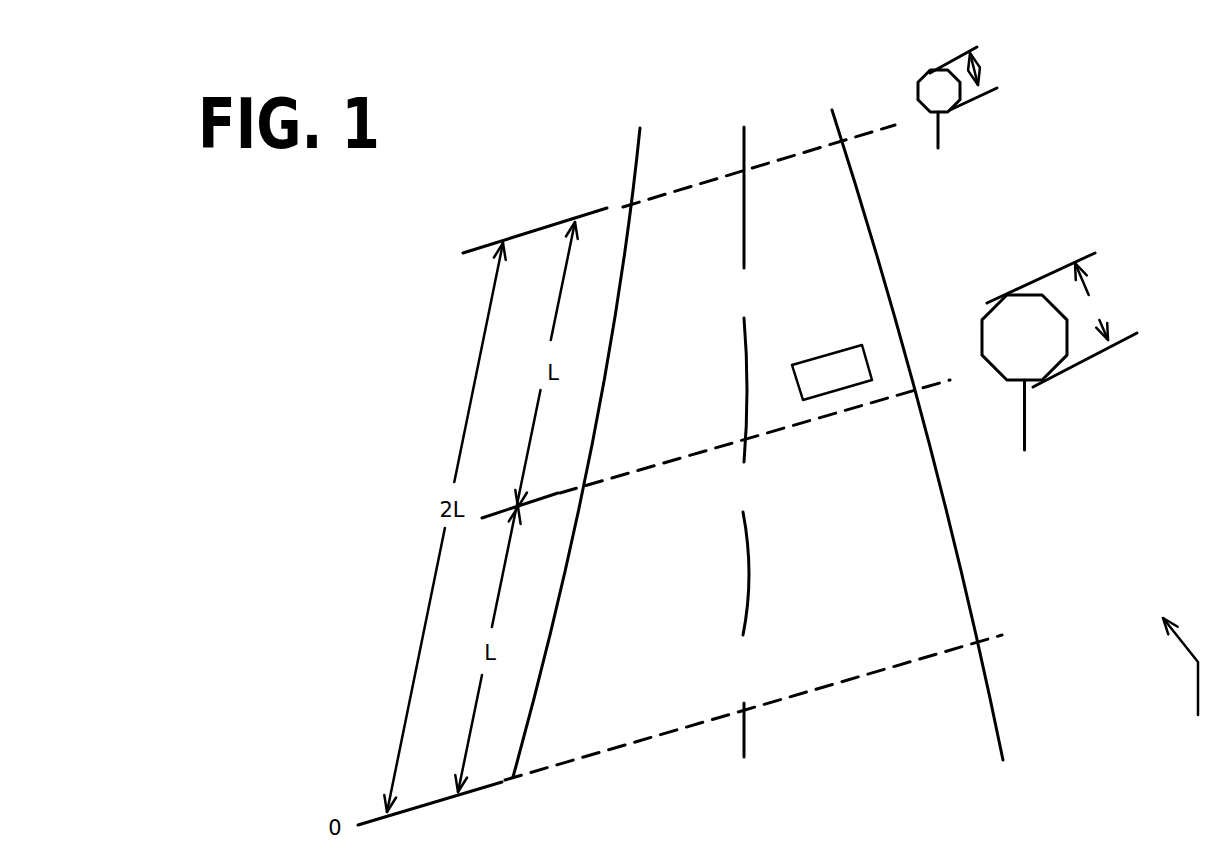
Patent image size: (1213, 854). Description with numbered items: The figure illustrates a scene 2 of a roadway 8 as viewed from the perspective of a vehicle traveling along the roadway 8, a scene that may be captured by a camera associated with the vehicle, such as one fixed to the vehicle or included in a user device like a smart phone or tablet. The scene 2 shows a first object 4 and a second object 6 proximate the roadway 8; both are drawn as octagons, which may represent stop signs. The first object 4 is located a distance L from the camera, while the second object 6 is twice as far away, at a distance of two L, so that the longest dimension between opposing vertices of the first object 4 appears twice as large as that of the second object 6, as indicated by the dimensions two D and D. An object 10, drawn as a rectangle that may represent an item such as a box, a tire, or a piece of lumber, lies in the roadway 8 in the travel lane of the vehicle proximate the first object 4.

The scene 2 is at (1185, 684).
The first object 4 is at (1058, 362).
The second object 6 is at (939, 89).
The roadway 8 is at (930, 435).
The object 10 is at (820, 346).